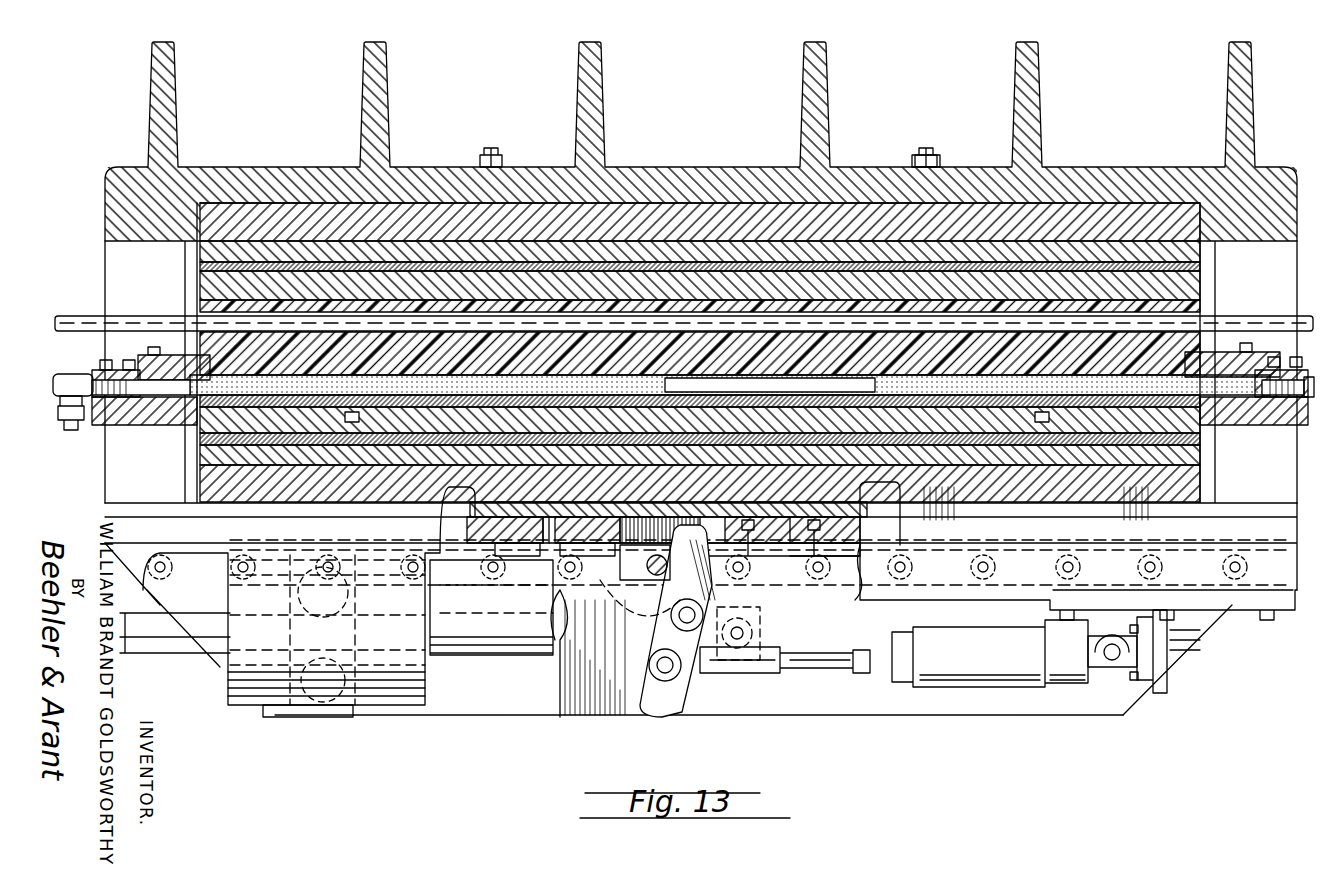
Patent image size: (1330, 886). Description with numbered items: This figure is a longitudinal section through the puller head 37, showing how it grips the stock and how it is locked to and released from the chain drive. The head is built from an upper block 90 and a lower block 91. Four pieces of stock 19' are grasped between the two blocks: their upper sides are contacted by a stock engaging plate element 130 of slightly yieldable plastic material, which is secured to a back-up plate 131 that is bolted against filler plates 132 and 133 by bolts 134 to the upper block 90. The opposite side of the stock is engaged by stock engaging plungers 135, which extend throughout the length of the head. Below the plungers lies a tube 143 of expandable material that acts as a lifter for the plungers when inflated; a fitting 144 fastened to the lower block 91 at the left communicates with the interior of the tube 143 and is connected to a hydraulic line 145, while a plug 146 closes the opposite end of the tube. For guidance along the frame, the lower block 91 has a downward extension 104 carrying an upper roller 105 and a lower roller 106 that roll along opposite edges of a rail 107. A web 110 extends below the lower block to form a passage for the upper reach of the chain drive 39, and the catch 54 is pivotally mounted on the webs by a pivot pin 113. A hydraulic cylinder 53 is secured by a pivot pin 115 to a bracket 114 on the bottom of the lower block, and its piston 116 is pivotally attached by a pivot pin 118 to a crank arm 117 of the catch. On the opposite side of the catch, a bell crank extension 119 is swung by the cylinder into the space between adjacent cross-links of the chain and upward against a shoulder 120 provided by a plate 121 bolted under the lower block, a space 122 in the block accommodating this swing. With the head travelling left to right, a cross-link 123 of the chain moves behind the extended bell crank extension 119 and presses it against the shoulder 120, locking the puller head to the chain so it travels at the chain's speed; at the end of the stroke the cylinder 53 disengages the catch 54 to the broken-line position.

The upper block 90 is at (1105, 174).
The filler plate 133 is at (325, 215).
The filler plate 132 is at (385, 250).
The back-up plate 131 is at (245, 287).
The stock engaging plate element 130 is at (1200, 305).
The stock 19' is at (678, 299).
The stock engaging plunger 135 is at (1185, 345).
The tube of expandable material 143 is at (250, 385).
The fitting 144 is at (62, 374).
The hydraulic line 145 is at (72, 428).
The plug 146 is at (1290, 405).
The bolt 134 is at (497, 152).
The puller head 37 is at (938, 126).
The lower block 91 is at (132, 415).
The space 122 is at (668, 515).
The lefthand web 110 is at (722, 551).
The upper roller 105 is at (290, 596).
The lower roller 106 is at (315, 718).
The downward extension 104 is at (372, 712).
The rail 107 is at (462, 678).
The shoulder 120 is at (712, 528).
The pivot pin 113 is at (671, 617).
The pivot pin 118 is at (651, 705).
The cross-link 123 is at (648, 568).
The bell crank extension 119 is at (715, 592).
The crank arm 117 is at (674, 712).
The catch 54 is at (620, 700).
The chain drive 39 is at (800, 580).
The plate 121 is at (825, 597).
The piston 116 is at (822, 670).
The hydraulic cylinder 53 is at (990, 653).
The pivot pin 115 is at (1112, 662).
The bracket 114 is at (1156, 693).